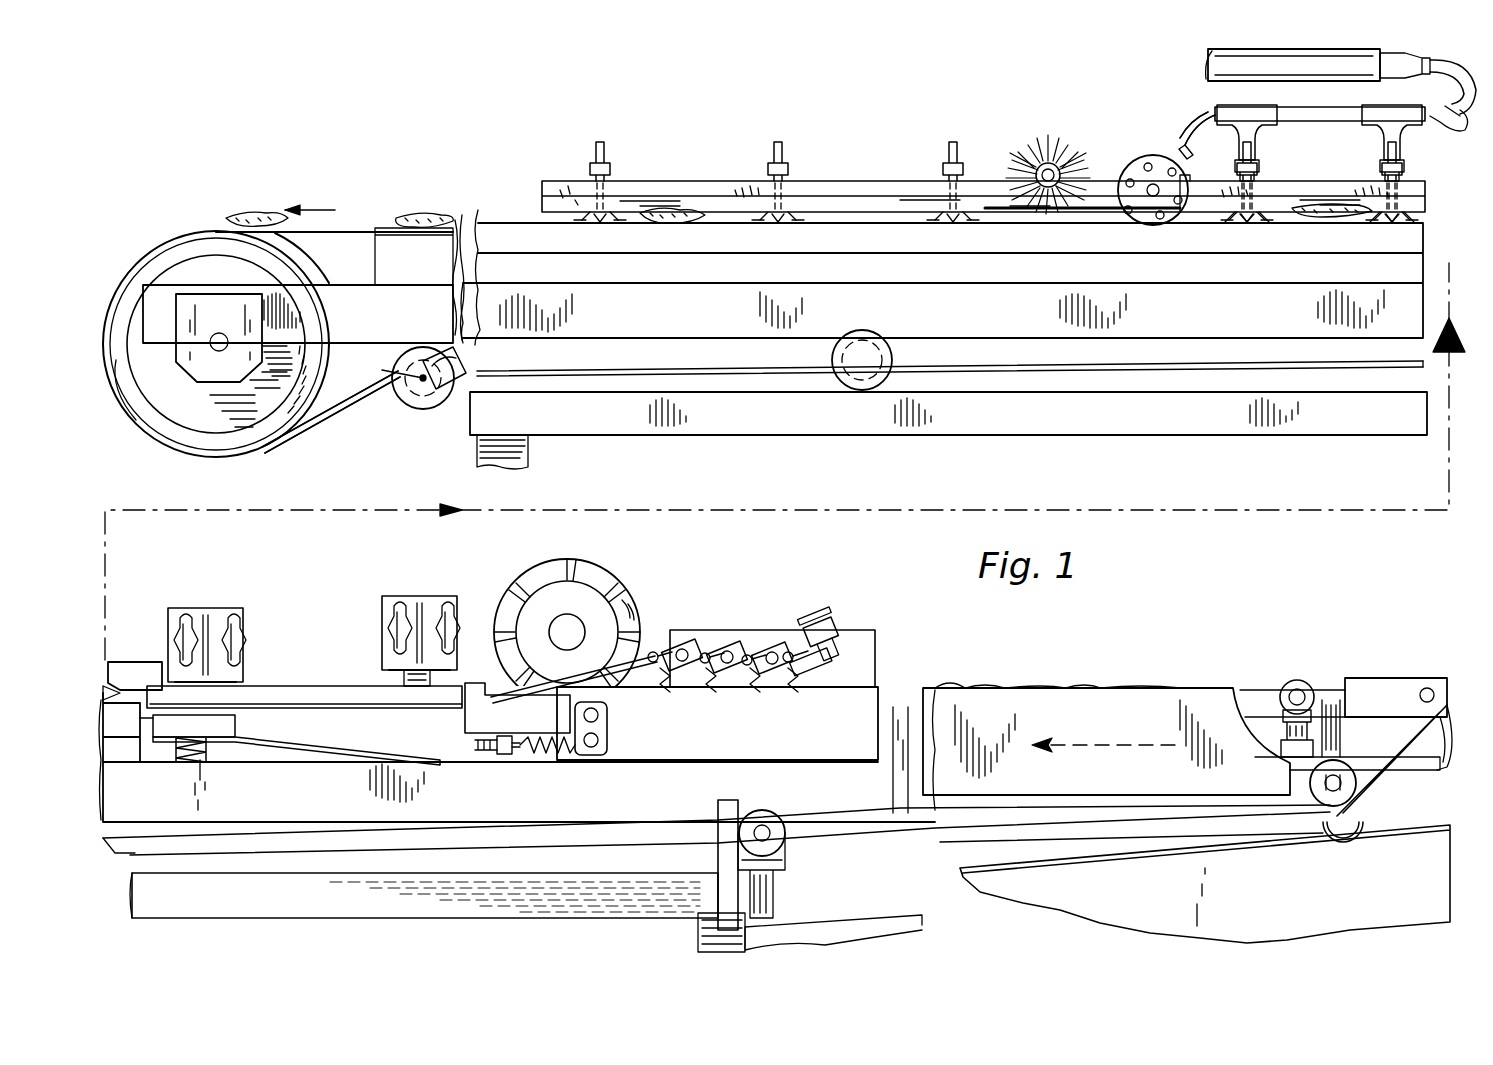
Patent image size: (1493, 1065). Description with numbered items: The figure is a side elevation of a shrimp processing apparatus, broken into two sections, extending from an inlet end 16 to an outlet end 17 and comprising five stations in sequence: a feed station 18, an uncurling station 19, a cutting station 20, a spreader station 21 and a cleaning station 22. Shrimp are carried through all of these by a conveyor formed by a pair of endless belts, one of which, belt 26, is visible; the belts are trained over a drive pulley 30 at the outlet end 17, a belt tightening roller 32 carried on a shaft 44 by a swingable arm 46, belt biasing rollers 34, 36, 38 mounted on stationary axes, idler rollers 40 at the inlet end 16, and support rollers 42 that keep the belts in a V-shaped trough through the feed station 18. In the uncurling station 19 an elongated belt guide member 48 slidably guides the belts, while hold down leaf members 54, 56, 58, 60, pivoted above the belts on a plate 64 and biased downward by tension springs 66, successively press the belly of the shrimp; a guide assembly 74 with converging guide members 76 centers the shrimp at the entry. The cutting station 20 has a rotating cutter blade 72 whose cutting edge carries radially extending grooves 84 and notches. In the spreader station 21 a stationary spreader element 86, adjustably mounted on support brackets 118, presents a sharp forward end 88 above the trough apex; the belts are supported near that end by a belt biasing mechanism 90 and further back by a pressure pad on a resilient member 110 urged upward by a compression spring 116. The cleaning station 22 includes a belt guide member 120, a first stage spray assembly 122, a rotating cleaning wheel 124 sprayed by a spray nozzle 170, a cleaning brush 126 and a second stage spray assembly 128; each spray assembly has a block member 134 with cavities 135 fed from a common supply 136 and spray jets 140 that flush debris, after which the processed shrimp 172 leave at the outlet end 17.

The inlet end 16 is at (1409, 694).
The outlet end 17 is at (130, 252).
The feed station 18 is at (1090, 656).
The uncurling station 19 is at (786, 735).
The cutting station 20 is at (565, 626).
The spreader station 21 is at (517, 688).
The cleaning station 22 is at (1006, 137).
The endless belt 26 is at (204, 229).
The drive pulley 30 is at (330, 414).
The belt tightening roller 32 is at (423, 406).
The belt biasing roller 34 is at (893, 360).
The belt biasing roller 36 is at (790, 856).
The belt biasing roller 38 is at (1343, 786).
The idler rollers 40 is at (1455, 706).
The support or guide rollers 42 is at (1020, 689).
The shaft 44 is at (382, 370).
The arm 46 is at (470, 368).
The belt guide member 48 is at (836, 733).
The hold down leaf member 54 is at (774, 682).
The hold down leaf member 56 is at (730, 680).
The hold down leaf member 58 is at (658, 688).
The hold down leaf member 60 is at (585, 671).
The plate 64 is at (870, 650).
The tension spring 66 is at (692, 668).
The cutter blade 72 is at (581, 619).
The guide assembly 74 is at (742, 668).
The guide member 76 is at (816, 682).
The radially extending grooves 84 is at (506, 608).
The spreader element 86 is at (299, 687).
The forward end 88 is at (496, 683).
The belt biasing mechanism 90 is at (530, 766).
The resilient member 110 is at (324, 752).
The compression spring 116 is at (198, 764).
The support brackets 118 is at (212, 600).
The belt guide member 120 is at (854, 227).
The first stage spray assembly 122 is at (1327, 123).
The cleaning wheel 124 is at (1156, 155).
The cleaning brush 126 is at (1046, 160).
The second stage spray assembly 128 is at (820, 162).
The block member 134 is at (560, 183).
The cavities 135 is at (615, 187).
The common supply 136 is at (1401, 48).
The spray jet 140 is at (600, 217).
The spray nozzle 170 is at (1190, 130).
The processed shrimp 172 is at (265, 212).